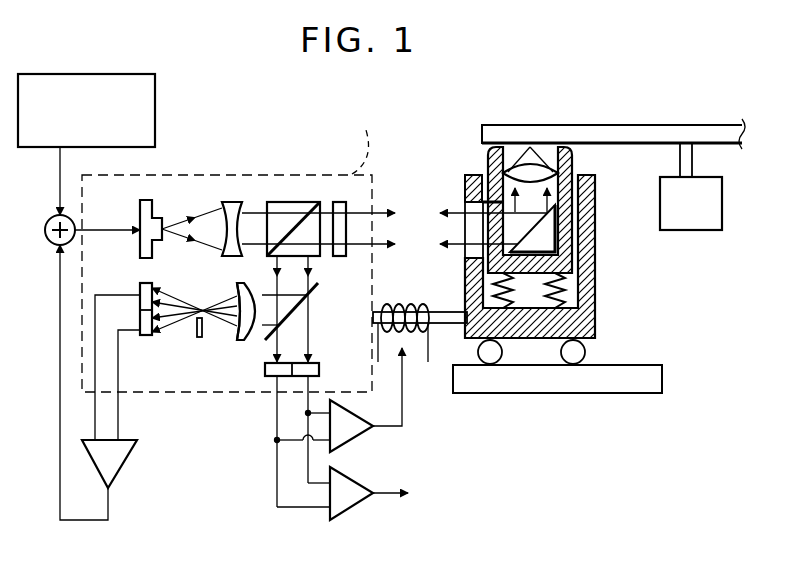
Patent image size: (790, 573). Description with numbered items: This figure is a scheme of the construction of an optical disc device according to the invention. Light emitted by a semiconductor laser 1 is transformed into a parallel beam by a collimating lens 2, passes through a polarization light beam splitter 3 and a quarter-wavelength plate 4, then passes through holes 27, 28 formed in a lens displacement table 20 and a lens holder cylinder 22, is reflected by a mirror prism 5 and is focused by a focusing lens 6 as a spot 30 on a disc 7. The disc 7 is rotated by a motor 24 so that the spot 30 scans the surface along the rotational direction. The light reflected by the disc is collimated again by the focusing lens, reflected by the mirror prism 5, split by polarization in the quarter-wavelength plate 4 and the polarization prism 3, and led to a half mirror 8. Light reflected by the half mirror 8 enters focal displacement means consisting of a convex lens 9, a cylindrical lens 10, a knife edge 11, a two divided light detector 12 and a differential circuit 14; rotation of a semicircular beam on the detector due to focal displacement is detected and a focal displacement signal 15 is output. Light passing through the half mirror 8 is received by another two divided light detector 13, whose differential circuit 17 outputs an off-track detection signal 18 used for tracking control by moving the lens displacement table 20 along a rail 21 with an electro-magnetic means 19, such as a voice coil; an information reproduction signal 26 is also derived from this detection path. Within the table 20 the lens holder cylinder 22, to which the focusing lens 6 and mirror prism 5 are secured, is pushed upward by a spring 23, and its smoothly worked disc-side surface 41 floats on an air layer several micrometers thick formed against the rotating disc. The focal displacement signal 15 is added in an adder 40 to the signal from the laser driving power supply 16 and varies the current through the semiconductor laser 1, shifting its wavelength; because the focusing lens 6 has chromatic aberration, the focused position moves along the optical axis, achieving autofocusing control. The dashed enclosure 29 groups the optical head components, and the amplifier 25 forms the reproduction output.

The semiconductor laser 1 is at (140, 205).
The collimating lens 2 is at (221, 202).
The polarization light beam splitter 3 is at (283, 202).
The quarter-wavelength plate 4 is at (338, 202).
The mirror prism 5 is at (552, 233).
The focusing lens 6 is at (553, 178).
The disc 7 is at (667, 124).
The half mirror 8 is at (309, 290).
The convex lens 9 is at (253, 340).
The cylindrical lens 10 is at (228, 342).
The knife edge 11 is at (198, 338).
The two divided light detector 12 is at (146, 336).
The two divided light detector 13 is at (320, 369).
The differential circuit 14 is at (122, 464).
The focal displacement signal 15 is at (60, 377).
The laser driving power supply 16 is at (57, 74).
The differential circuit 17 is at (362, 437).
The off-track detection signal 18 is at (403, 396).
The electro-magnetic means 19 is at (403, 305).
The lens displacement table 20 is at (598, 326).
The rail 21 is at (573, 394).
The lens holder cylinder 22 is at (488, 160).
The spring 23 is at (560, 294).
The motor 24 is at (690, 231).
The summing amplifier 25 is at (357, 503).
The information reproduction signal 26 is at (393, 486).
The hole 27 is at (466, 208).
The hole 28 is at (494, 203).
The optical head unit 29 is at (345, 140).
The spot 30 is at (530, 146).
The adder 40 is at (50, 243).
The surface of the lens holder cylinder 41 is at (593, 143).